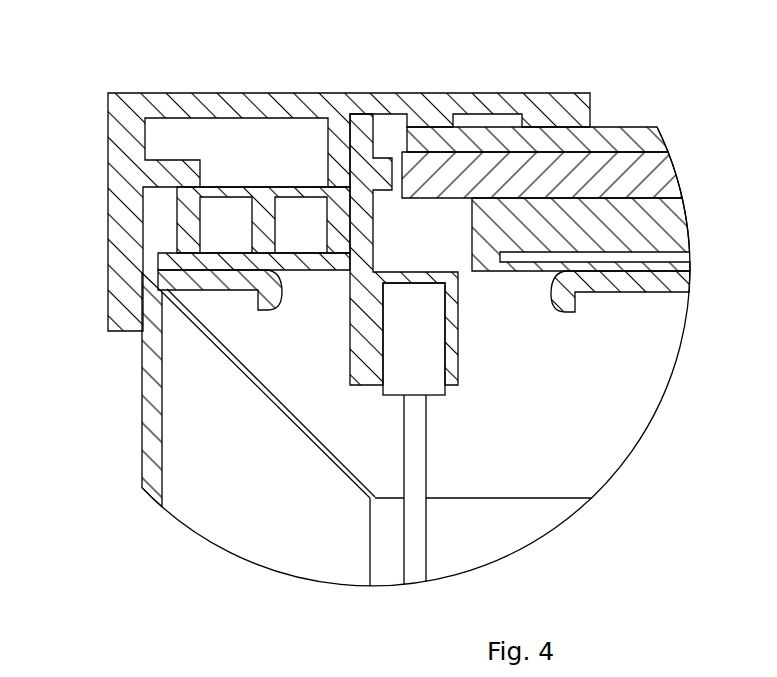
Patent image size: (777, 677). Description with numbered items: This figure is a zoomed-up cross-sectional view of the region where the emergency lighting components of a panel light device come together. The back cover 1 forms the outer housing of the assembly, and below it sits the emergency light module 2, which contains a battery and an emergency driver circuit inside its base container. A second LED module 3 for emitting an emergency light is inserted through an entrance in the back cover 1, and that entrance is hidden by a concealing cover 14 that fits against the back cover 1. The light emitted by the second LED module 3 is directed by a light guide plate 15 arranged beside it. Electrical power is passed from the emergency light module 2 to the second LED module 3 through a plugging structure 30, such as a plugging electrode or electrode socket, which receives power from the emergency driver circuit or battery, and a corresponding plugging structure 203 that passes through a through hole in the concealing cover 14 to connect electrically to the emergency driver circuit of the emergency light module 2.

The back cover 1 is at (128, 210).
The emergency light module 2 is at (230, 456).
The second LED module 3 is at (370, 213).
The concealing cover 14 is at (297, 253).
The light guide plate 15 is at (497, 173).
The plugging structure 30 is at (460, 345).
The corresponding plugging structure 203 is at (420, 372).